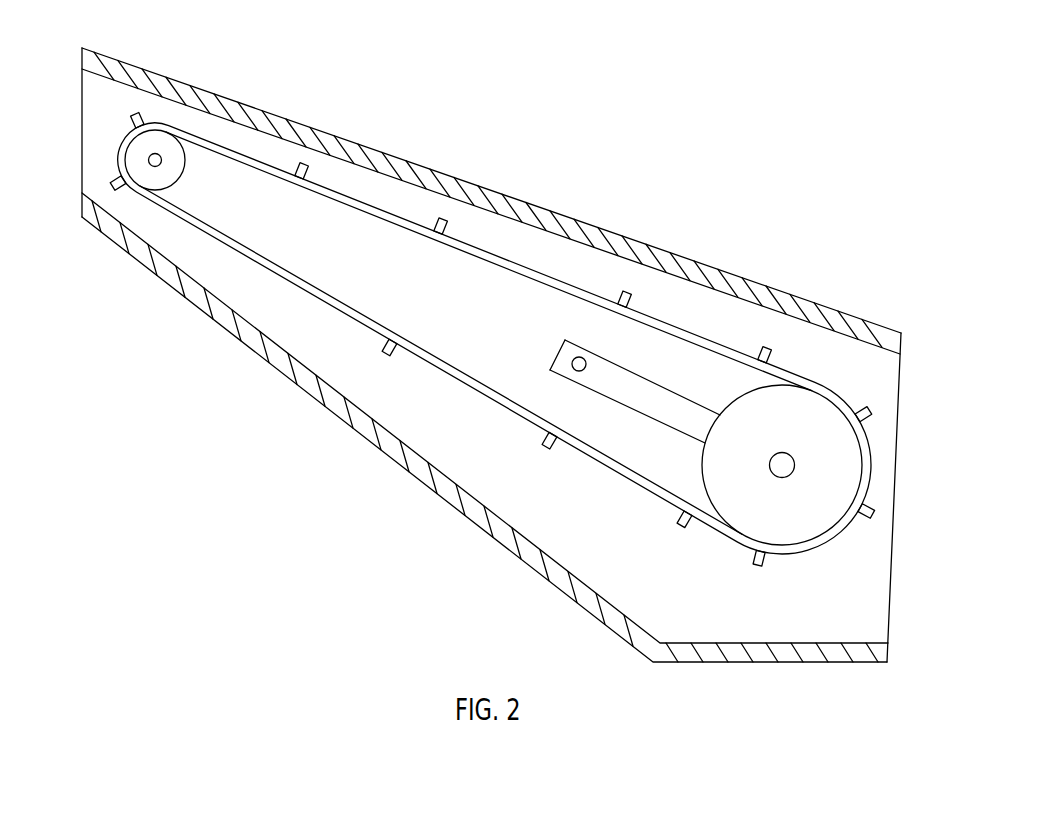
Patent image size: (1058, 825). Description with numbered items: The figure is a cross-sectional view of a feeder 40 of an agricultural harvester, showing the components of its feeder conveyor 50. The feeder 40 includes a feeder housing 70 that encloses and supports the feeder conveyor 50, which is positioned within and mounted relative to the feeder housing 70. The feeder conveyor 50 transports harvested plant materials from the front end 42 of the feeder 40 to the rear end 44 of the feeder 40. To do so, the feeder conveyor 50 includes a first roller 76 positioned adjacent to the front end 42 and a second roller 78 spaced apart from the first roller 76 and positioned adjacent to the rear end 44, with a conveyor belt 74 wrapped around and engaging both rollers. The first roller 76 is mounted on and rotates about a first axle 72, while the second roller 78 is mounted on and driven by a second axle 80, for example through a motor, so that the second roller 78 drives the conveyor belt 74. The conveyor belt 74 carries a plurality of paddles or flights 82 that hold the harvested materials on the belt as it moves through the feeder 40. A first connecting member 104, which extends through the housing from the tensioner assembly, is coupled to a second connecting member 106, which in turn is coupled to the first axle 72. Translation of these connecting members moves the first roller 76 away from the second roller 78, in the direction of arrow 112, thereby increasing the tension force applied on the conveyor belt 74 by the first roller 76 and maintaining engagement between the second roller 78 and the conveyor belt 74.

The feeder 40 is at (752, 63).
The front end 42 is at (902, 425).
The rear end 44 is at (95, 115).
The feeder conveyor 50 is at (518, 243).
The feeder housing 70 is at (618, 232).
The first axle 72 is at (773, 474).
The conveyor belt 74 is at (508, 410).
The first roller 76 is at (818, 518).
The second roller 78 is at (168, 175).
The second axle 80 is at (161, 157).
The paddles or flights 82 is at (440, 216).
The first connecting member 104 is at (580, 357).
The second connecting member 106 is at (652, 407).
The arrow 112 is at (466, 310).